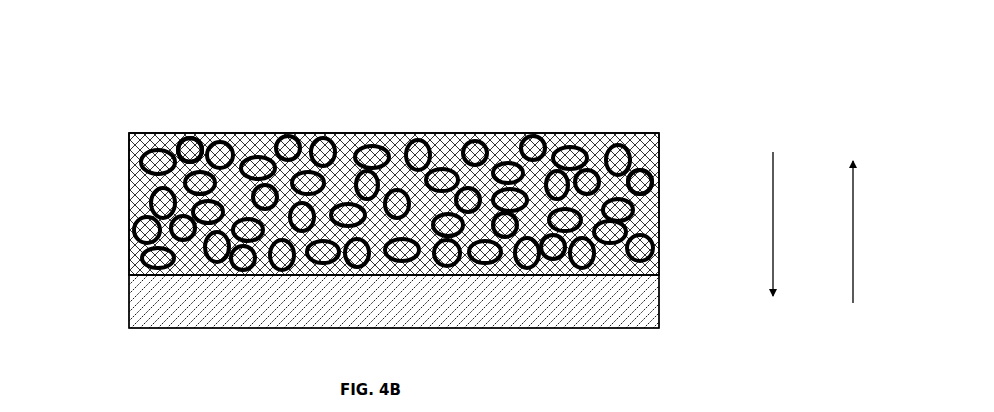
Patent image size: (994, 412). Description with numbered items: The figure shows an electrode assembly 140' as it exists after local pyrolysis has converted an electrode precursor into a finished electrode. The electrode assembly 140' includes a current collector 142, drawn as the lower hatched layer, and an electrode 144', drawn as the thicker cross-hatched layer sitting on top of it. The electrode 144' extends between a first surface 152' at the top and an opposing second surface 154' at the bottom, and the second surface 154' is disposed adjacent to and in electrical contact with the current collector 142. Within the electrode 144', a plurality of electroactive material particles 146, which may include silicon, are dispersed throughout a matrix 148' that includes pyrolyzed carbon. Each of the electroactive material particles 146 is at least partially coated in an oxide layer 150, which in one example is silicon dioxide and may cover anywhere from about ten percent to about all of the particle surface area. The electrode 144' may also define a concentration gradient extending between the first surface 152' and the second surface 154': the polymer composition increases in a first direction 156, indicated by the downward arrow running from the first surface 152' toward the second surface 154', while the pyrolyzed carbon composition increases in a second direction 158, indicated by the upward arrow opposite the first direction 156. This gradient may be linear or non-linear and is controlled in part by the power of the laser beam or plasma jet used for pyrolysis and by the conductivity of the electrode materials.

The electrode assembly 140' is at (338, 173).
The current collector 142 is at (210, 310).
The electrode 144' is at (353, 204).
The electroactive material particles 146 is at (226, 142).
The matrix 148' is at (394, 182).
The oxide layer 150 is at (184, 133).
The first surface 152' is at (437, 104).
The second surface 154' is at (426, 297).
The first direction 156 is at (773, 257).
The second direction 158 is at (853, 292).